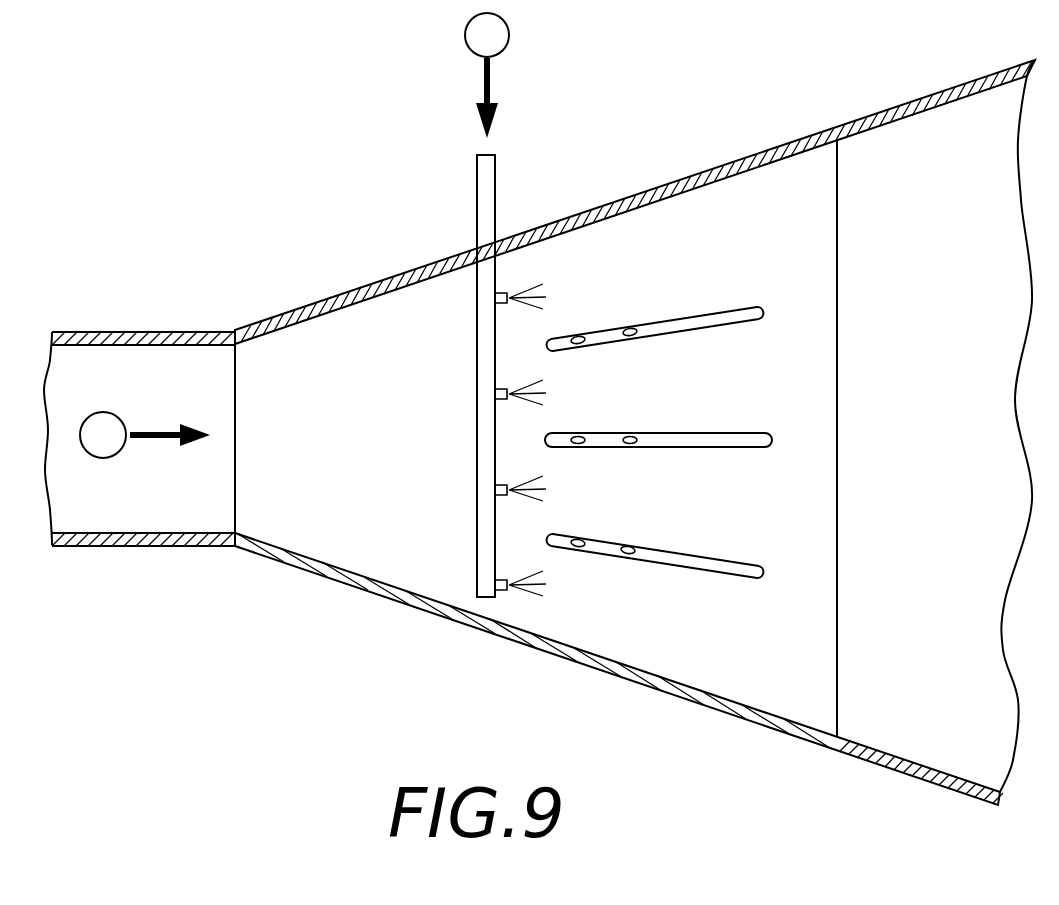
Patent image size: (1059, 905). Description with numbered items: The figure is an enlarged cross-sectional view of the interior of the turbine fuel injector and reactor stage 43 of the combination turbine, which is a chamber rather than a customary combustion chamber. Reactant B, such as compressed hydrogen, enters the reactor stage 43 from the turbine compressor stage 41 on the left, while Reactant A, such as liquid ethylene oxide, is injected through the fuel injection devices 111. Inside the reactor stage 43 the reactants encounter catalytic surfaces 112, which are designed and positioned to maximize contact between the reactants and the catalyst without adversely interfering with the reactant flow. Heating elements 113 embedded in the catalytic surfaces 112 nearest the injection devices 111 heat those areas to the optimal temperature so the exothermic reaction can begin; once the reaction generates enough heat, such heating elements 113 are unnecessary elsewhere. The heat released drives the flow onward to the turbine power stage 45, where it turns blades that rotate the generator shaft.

The turbine compressor stage 41 is at (158, 330).
The turbine fuel injector and reactor stage 43 is at (348, 290).
The turbine power stage 45 is at (943, 88).
The fuel injection device 111 is at (478, 225).
The catalytic surface 112 is at (707, 312).
The heating element 113 is at (628, 330).